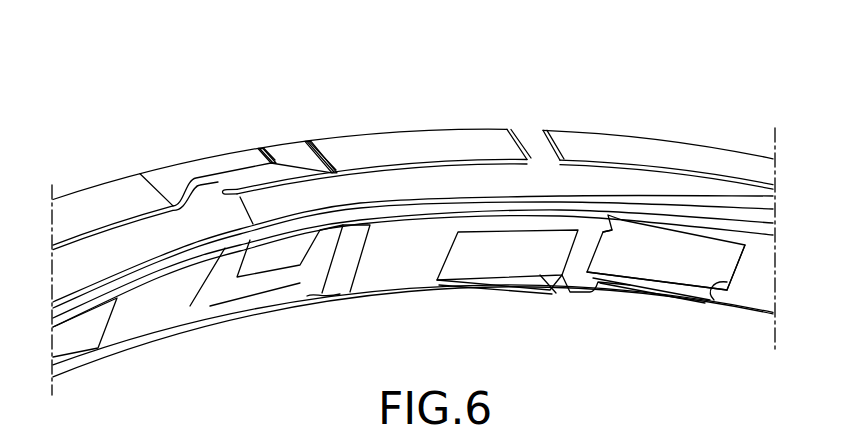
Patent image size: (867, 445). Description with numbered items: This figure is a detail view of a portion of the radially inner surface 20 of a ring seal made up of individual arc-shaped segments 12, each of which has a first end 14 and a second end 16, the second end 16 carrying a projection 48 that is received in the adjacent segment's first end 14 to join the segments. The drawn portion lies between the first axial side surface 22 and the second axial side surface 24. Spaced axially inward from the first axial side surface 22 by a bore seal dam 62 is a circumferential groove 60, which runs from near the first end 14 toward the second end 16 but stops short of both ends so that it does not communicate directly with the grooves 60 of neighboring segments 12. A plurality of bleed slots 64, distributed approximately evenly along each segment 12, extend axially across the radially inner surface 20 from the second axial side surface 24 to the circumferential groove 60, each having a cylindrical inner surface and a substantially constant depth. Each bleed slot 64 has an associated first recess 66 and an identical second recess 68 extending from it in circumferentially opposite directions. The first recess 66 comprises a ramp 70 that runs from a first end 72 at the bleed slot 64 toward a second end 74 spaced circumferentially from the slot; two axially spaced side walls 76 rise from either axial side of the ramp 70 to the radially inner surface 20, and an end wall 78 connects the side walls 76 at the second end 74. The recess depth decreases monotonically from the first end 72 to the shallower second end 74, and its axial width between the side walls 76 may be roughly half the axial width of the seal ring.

The arc-shaped segment 12 is at (573, 145).
The first end 14 is at (216, 148).
The second end 16 is at (280, 141).
The radially inner surface 20 is at (368, 283).
The first axial side surface 22 is at (422, 132).
The second axial side surface 24 is at (520, 290).
The projection 48 is at (260, 256).
The circumferential groove 60 is at (313, 228).
The bore seal dam 62 is at (493, 206).
The bleed slot 64 is at (572, 280).
The first recess 66 is at (652, 272).
The second recess 68 is at (462, 282).
The ramp 70 is at (650, 252).
The first end 72 is at (593, 215).
The second end 74 is at (737, 252).
The side wall 76 is at (602, 270).
The end wall 78 is at (722, 284).